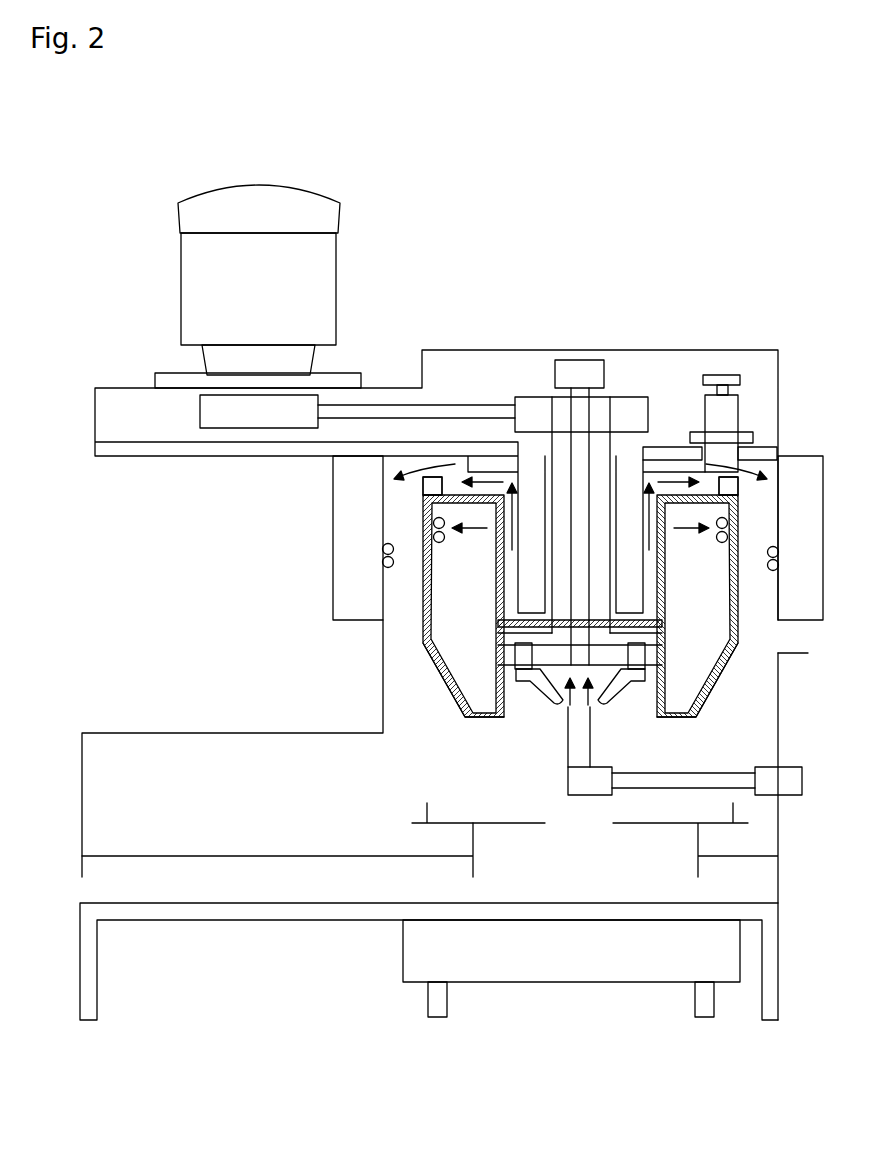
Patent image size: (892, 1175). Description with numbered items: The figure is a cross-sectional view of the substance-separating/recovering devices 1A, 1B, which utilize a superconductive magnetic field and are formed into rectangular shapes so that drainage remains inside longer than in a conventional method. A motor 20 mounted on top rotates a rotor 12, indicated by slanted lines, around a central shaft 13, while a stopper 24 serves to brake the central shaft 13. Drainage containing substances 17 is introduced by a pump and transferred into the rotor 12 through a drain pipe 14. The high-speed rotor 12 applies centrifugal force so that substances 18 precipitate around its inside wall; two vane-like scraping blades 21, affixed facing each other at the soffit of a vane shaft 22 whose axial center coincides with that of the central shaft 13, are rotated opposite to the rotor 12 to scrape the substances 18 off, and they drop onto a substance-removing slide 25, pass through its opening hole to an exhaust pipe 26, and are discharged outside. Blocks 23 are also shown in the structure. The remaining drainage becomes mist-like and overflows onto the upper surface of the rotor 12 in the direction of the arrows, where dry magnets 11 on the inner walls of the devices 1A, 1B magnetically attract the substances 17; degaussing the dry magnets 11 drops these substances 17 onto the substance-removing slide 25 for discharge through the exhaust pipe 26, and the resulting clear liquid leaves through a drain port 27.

The substance-separating/recovering device 1A is at (429, 647).
The substance-separating/recovering device 1B is at (460, 350).
The dry magnets 11 is at (333, 563).
The rotor 12 is at (423, 639).
The central shaft 13 is at (598, 407).
The drain pipe 14 is at (730, 780).
The substances 17 is at (390, 568).
The substances 18 is at (440, 542).
The motor 20 is at (293, 188).
The scraping blades 21 is at (487, 703).
The vane shaft 22 is at (578, 360).
The blocks 23 is at (428, 489).
The stopper 24 is at (733, 417).
The substance-removing slide 25 is at (512, 820).
The exhaust pipe 26 is at (198, 867).
The drain port 27 is at (802, 635).